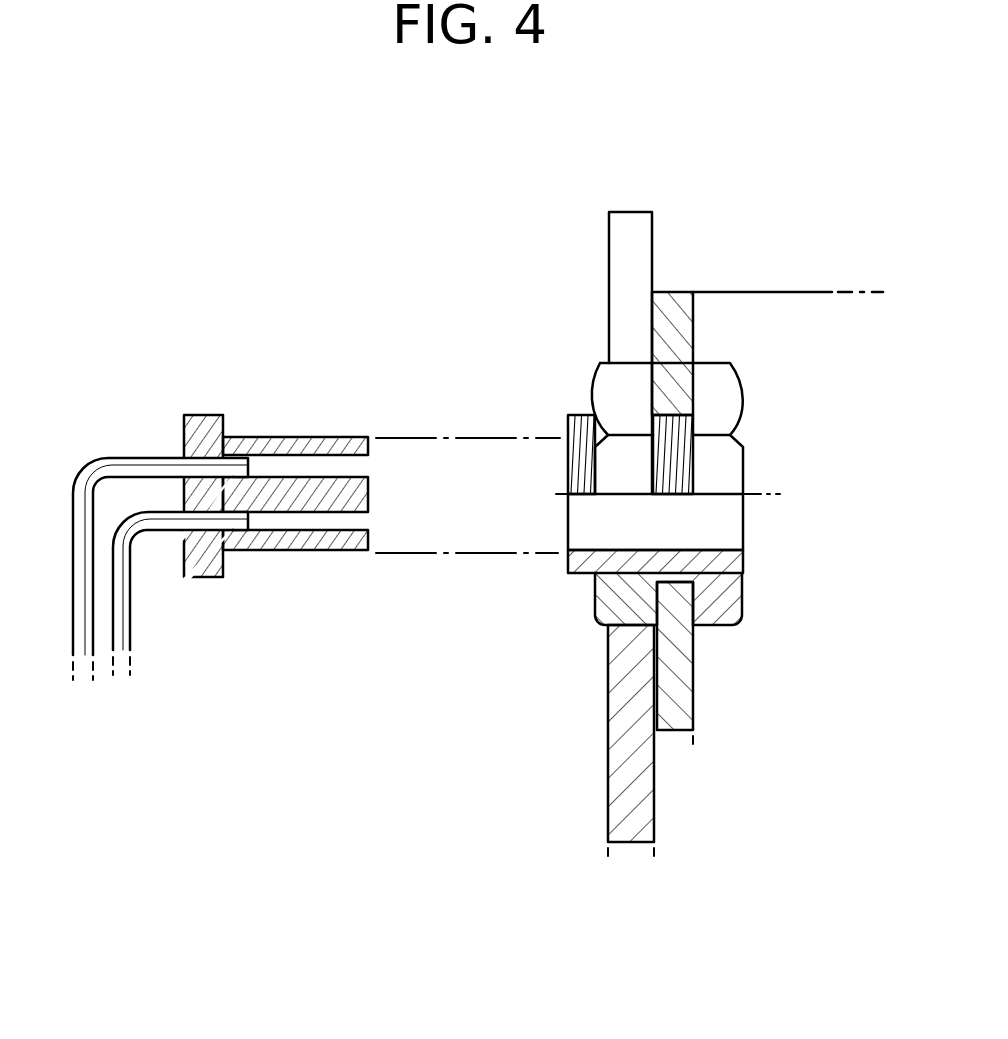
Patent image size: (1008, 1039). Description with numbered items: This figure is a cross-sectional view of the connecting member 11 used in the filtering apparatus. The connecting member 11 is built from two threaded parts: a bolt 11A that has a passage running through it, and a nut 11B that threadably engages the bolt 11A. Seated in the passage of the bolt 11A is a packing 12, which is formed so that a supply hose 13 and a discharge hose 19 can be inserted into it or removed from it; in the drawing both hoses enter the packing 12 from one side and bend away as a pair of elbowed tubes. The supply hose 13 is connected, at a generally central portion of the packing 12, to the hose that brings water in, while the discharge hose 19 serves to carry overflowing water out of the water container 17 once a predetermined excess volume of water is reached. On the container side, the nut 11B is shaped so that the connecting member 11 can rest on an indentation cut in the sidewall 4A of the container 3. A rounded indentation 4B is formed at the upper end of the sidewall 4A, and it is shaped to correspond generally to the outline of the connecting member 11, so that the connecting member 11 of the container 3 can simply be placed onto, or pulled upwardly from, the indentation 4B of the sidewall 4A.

The container 3 is at (718, 291).
The sidewall 4A is at (605, 718).
The rounded indentation 4B is at (618, 242).
The connecting member 11 is at (600, 366).
The bolt 11A is at (727, 580).
The nut 11B is at (612, 602).
The packing 12 is at (263, 437).
The supply hose 13 is at (132, 635).
The water container 17 is at (802, 312).
The discharge hose 19 is at (103, 468).